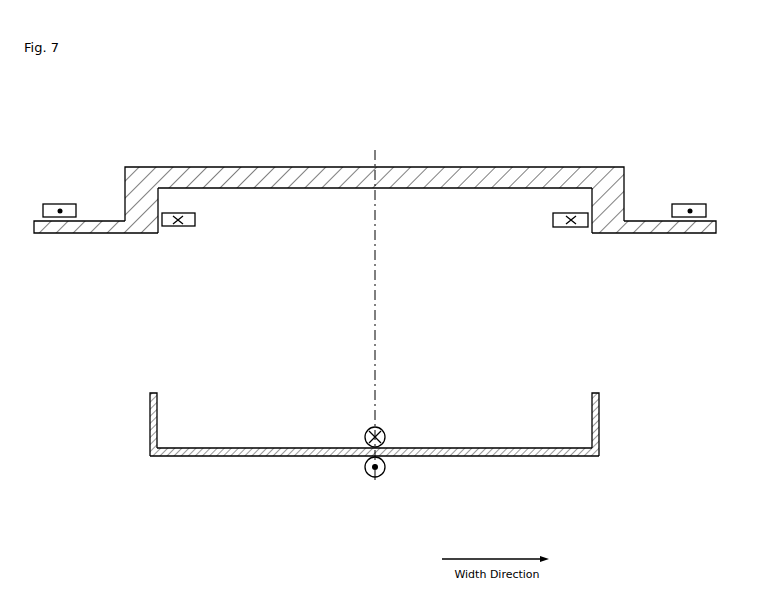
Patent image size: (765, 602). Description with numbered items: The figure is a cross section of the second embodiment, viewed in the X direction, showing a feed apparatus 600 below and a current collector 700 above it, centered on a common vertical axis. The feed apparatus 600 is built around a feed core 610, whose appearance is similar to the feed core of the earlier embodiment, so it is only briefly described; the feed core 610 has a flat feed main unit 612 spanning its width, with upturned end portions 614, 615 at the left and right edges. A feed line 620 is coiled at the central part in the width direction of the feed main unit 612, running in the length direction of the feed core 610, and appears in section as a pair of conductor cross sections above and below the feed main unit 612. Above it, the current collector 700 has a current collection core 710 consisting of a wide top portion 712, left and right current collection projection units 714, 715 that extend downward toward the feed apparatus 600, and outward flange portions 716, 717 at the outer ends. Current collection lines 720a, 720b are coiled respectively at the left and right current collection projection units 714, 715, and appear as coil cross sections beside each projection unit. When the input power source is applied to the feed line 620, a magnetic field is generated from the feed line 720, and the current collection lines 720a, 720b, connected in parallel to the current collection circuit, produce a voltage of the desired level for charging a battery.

The current collector 700 is at (678, 110).
The current collection core 710 is at (649, 118).
The top plate portion 712 is at (434, 167).
The left current collection projection unit 714 is at (148, 204).
The right current collection projection unit 715 is at (600, 204).
The left flange portion 716 is at (99, 220).
The right flange portion 717 is at (652, 220).
The feed line 720 is at (635, 274).
The current collection line 720a is at (177, 228).
The current collection line 720b is at (693, 218).
The feed apparatus 600 is at (624, 387).
The feed core 610 is at (592, 498).
The feed main unit 612 is at (316, 456).
The left side wall 614 is at (147, 437).
The right side wall 615 is at (600, 437).
The feed line 620 is at (386, 466).